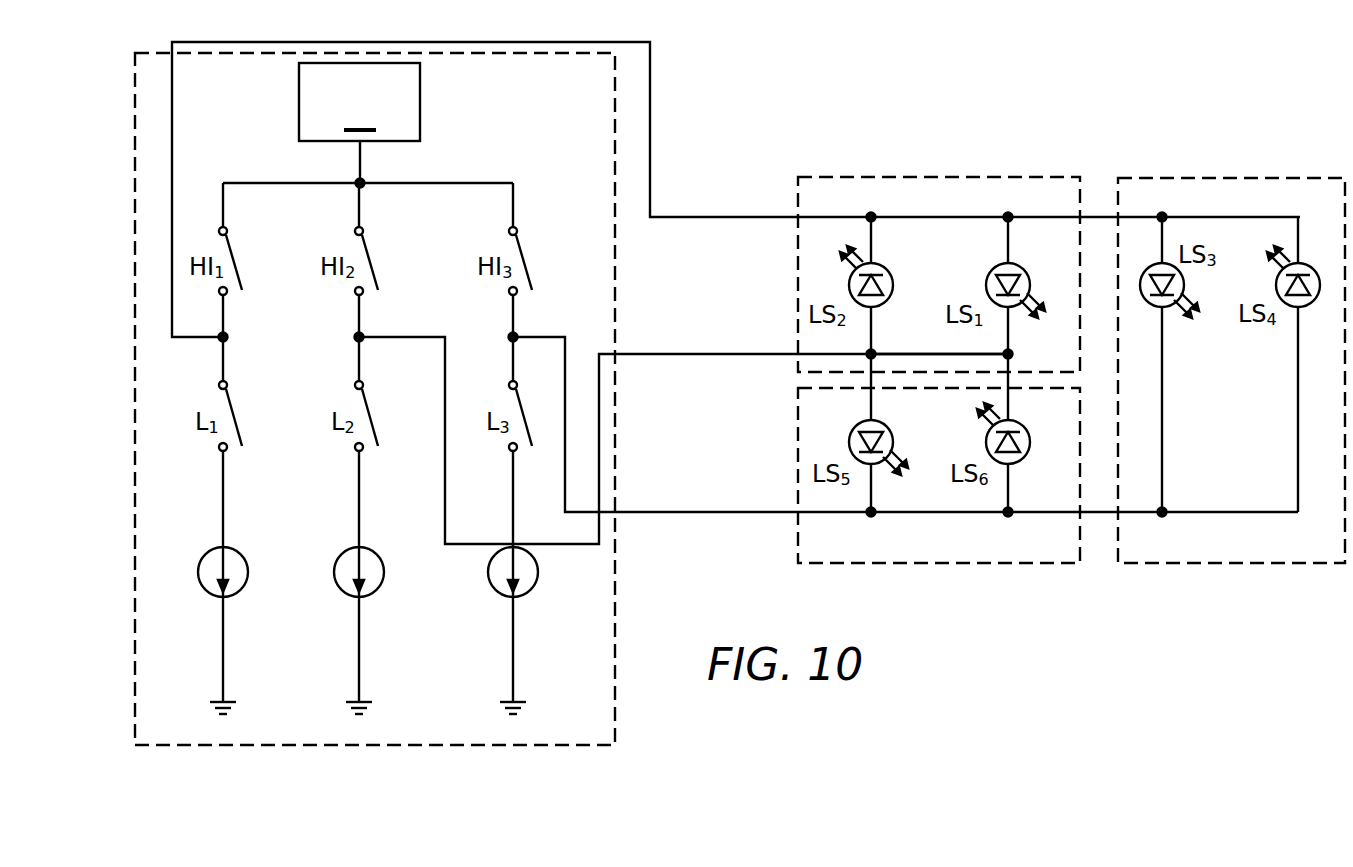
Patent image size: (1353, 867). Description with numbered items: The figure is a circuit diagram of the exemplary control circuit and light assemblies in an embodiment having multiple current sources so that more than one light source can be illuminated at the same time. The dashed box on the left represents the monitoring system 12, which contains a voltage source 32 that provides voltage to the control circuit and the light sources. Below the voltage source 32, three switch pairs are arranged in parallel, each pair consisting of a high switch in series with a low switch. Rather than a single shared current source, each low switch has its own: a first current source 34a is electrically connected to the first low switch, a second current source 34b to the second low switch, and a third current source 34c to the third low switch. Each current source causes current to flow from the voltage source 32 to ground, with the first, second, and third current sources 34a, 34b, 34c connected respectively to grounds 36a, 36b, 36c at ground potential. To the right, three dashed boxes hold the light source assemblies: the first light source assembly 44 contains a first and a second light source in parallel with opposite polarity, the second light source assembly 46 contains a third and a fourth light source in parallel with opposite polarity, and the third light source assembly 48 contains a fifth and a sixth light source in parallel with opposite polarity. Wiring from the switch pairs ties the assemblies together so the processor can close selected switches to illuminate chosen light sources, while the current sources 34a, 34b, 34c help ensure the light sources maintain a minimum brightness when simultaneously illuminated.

The monitoring system 12 is at (135, 478).
The voltage source 32 is at (420, 104).
The first current source 34a is at (248, 572).
The second current source 34b is at (384, 572).
The third current source 34c is at (534, 586).
The ground 36a is at (238, 706).
The ground 36b is at (374, 706).
The ground 36c is at (528, 706).
The first light source assembly 44 is at (1035, 177).
The second light source assembly 46 is at (1300, 178).
The third light source assembly 48 is at (1040, 563).